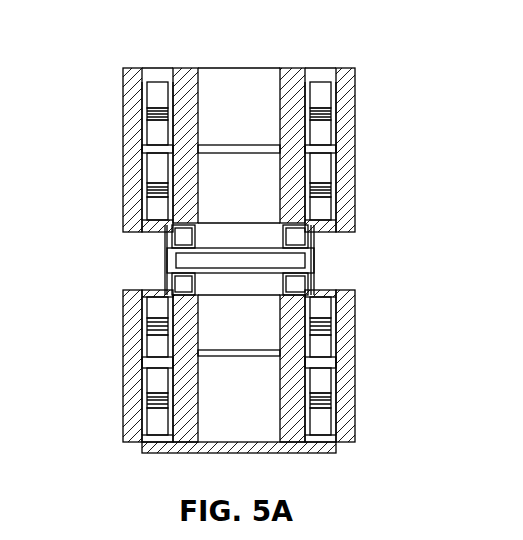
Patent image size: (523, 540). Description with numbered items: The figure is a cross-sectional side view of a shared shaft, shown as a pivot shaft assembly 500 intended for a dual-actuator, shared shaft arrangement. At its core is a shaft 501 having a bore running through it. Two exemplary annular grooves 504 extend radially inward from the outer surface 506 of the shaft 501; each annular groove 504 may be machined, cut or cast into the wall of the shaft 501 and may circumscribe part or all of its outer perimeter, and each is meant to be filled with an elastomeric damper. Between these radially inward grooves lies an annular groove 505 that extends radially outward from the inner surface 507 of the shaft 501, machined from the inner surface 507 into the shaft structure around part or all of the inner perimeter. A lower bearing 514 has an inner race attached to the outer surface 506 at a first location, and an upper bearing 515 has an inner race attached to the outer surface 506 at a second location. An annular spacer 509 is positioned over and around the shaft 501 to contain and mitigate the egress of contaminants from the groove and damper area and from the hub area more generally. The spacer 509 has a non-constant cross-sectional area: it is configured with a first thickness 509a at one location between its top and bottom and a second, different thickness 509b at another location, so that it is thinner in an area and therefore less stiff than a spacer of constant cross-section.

The pivot shaft assembly 500 is at (156, 26).
The shaft 501 is at (185, 73).
The annular groove 504 is at (172, 242).
The annular groove 505 is at (193, 262).
The outer surface 506 is at (140, 219).
The inner surface 507 is at (283, 333).
The annular spacer 509 is at (170, 288).
The first thickness 509a is at (312, 241).
The second thickness 509b is at (315, 259).
The lower bearing 514 is at (320, 410).
The upper bearing 515 is at (152, 98).